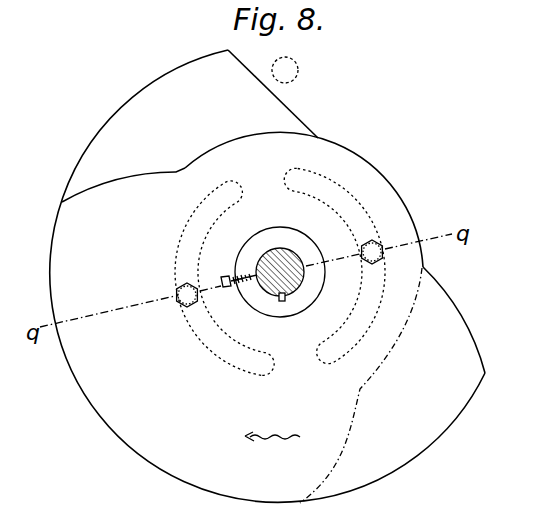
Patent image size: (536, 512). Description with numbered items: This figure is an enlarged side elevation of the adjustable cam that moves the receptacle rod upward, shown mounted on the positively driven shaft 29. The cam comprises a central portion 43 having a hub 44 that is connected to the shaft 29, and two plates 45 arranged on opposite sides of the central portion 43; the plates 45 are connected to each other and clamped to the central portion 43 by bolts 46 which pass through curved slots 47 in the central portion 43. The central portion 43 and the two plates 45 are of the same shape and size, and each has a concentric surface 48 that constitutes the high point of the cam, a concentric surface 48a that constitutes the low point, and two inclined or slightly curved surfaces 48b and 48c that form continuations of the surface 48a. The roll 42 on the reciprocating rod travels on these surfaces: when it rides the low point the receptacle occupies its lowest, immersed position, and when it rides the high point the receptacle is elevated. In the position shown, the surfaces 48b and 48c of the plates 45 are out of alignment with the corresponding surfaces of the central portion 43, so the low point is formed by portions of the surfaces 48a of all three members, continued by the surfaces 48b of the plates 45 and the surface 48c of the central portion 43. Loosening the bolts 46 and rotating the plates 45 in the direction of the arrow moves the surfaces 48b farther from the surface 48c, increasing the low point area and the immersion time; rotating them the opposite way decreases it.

The positively driven shaft 29 is at (284, 258).
The roll 42 is at (298, 63).
The central portion 43 is at (261, 94).
The hub 44 is at (298, 303).
The plates 45 is at (246, 414).
The bolts 46 is at (184, 304).
The curved slots 47 is at (316, 358).
The concentric surface 48 is at (92, 413).
The concentric surface 48a is at (410, 201).
The inclined or slightly curved surface 48b is at (472, 314).
The inclined or slightly curved surface 48c is at (311, 100).